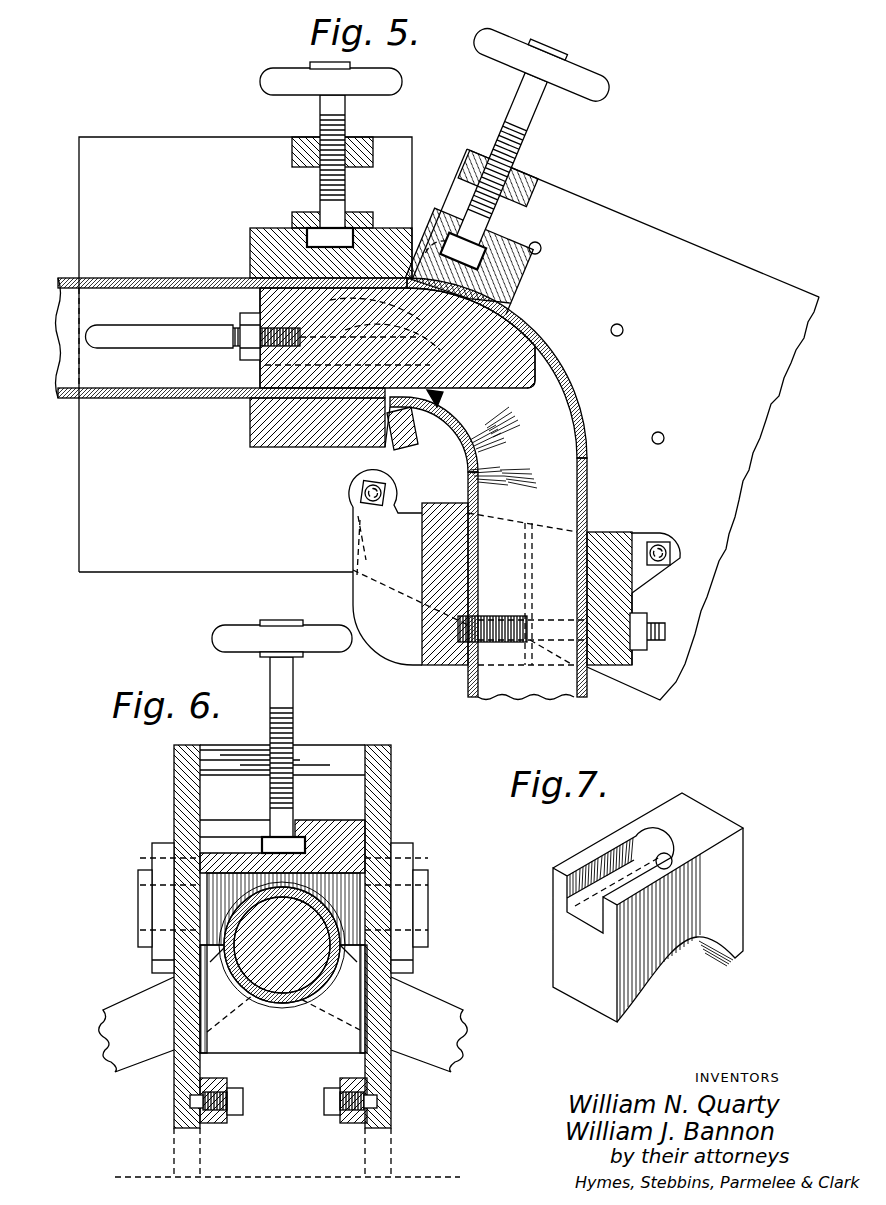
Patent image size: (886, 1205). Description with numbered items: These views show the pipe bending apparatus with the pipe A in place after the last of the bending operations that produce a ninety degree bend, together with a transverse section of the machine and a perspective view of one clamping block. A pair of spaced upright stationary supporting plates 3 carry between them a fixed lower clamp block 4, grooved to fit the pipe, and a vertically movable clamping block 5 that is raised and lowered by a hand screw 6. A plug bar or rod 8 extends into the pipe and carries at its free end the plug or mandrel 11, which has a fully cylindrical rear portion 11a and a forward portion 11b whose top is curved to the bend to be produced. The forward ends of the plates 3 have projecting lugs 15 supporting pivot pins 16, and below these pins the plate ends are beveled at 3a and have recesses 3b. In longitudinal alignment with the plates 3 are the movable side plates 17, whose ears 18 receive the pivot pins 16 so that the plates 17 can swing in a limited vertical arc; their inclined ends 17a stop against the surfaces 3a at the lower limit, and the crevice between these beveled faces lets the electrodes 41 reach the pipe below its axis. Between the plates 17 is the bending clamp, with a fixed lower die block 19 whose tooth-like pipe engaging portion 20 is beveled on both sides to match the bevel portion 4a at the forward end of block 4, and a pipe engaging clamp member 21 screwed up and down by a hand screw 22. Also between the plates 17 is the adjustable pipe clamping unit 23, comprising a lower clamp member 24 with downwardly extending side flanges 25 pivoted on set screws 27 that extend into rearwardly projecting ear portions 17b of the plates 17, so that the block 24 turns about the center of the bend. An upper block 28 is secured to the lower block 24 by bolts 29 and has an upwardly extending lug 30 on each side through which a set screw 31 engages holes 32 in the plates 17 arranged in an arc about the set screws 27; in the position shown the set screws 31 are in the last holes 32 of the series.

In FIG. 5, the stationary supporting plates 3 is at (152, 138).
In FIG. 6, the stationary supporting plates 3 is at (174, 1153).
In FIG. 5, the tapered or beveled ends 3a is at (357, 548).
In FIG. 5, the recesses 3b is at (352, 491).
In FIG. 5, the fixed lower clamp member or block 4 is at (258, 433).
In FIG. 5, the bevel portion 4a is at (384, 426).
In FIG. 5, the vertically movable clamping block or member 5 is at (250, 236).
In FIG. 5, the hand screw 6 is at (320, 122).
In FIG. 5, the plug bar or rod 8 is at (193, 330).
In FIG. 5, the plug or mandrel 11 is at (437, 378).
In FIG. 6, the plug or mandrel 11 is at (270, 978).
In FIG. 5, the cylindrical rear portion 11a is at (260, 380).
In FIG. 5, the forward portion 11b is at (527, 393).
In FIG. 5, the forwardly projecting lugs 15 is at (424, 215).
In FIG. 6, the forwardly projecting lugs 15 is at (158, 845).
In FIG. 5, the pivot pins 16 is at (500, 311).
In FIG. 6, the pivot pins 16 is at (140, 900).
In FIG. 5, the movable side plates 17 is at (640, 235).
In FIG. 6, the movable side plates 17 is at (174, 784).
In FIG. 5, the beveled or inclined ends 17a is at (358, 572).
In FIG. 5, the rearwardly projecting ear portions 17b is at (353, 504).
In FIG. 6, the rearwardly projecting ear portions 17b is at (352, 1122).
In FIG. 5, the ears 18 is at (430, 248).
In FIG. 6, the ears 18 is at (413, 858).
In FIG. 5, the fixed lower die block 19 is at (383, 453).
In FIG. 6, the fixed lower die block 19 is at (292, 1046).
In FIG. 5, the pipe engaging portion 20 is at (412, 445).
In FIG. 6, the pipe engaging portion 20 is at (300, 995).
In FIG. 5, the pipe engaging block or clamp member 21 is at (498, 287).
In FIG. 6, the pipe engaging block or clamp member 21 is at (324, 822).
In FIG. 7, the pipe engaging block or clamp member 21 is at (733, 818).
In FIG. 5, the hand screw 22 is at (530, 142).
In FIG. 6, the hand screw 22 is at (294, 735).
In FIG. 5, the adjustable pipe clamping unit 23 is at (618, 532).
In FIG. 5, the lower clamp member 24 is at (447, 663).
In FIG. 5, the side flanges 25 is at (387, 633).
In FIG. 5, the set screws 27 is at (386, 493).
In FIG. 6, the set screws 27 is at (190, 1100).
In FIG. 5, the upper block 28 is at (633, 602).
In FIG. 5, the bolts 29 is at (666, 632).
In FIG. 5, the upwardly extending lug 30 is at (683, 560).
In FIG. 5, the set screw 31 is at (672, 553).
In FIG. 5, the holes or recesses 32 is at (542, 249).
In FIG. 6, the rigid electrode 41 is at (128, 1030).
In FIG. 5, the pipe A is at (118, 289).
In FIG. 6, the pipe A is at (322, 908).